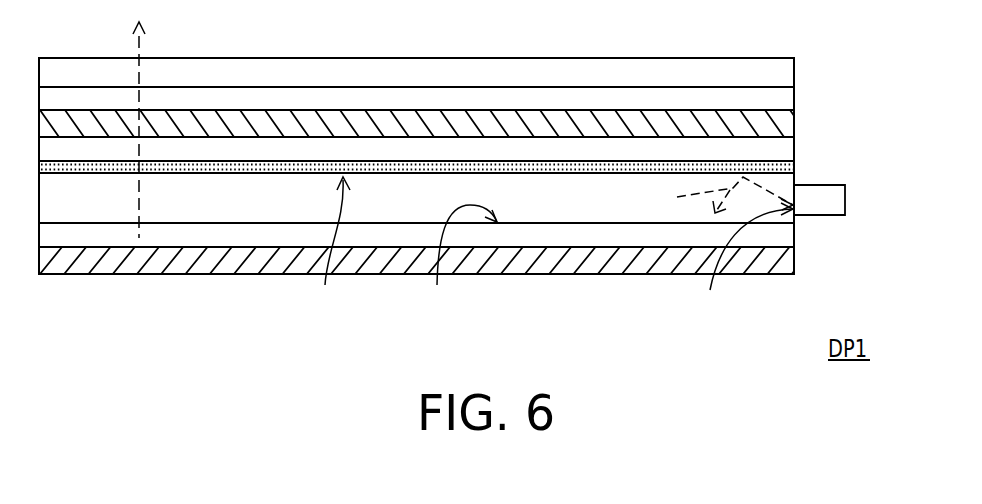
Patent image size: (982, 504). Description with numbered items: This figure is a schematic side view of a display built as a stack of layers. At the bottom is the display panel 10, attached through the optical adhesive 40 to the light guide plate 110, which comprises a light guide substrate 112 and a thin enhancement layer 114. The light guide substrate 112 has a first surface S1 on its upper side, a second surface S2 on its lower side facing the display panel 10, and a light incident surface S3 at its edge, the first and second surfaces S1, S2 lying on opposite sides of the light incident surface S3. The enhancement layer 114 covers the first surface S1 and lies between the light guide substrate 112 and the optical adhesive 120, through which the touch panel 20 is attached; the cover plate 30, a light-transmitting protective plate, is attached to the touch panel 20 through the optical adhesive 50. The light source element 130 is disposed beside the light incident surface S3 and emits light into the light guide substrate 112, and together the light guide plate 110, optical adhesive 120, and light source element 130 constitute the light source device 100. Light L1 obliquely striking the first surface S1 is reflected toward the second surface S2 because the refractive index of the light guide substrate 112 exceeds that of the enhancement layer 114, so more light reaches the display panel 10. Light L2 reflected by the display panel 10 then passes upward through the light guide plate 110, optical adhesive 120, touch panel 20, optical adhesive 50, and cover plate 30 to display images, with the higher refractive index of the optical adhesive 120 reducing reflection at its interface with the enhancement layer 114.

The display panel 10 is at (787, 258).
The touch panel 20 is at (786, 120).
The cover plate 30 is at (780, 68).
The optical adhesive 40 is at (787, 233).
The optical adhesive 50 is at (787, 98).
The light source device 100 is at (904, 90).
The light guide plate 110 is at (858, 112).
The light guide substrate 112 is at (787, 184).
The enhancement layer 114 is at (788, 152).
The optical adhesive 120 is at (795, 174).
The light source element 130 is at (840, 200).
The first surface S1 is at (331, 246).
The second surface S2 is at (462, 262).
The light incident surface S3 is at (745, 262).
The light L1 is at (721, 195).
The light L2 is at (139, 47).